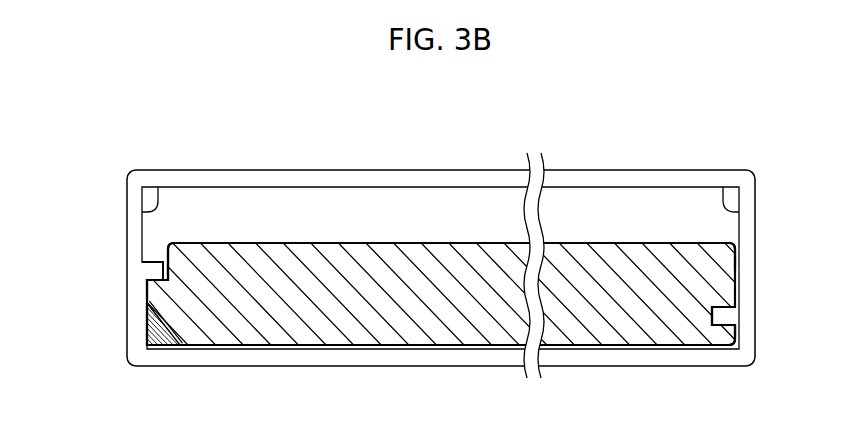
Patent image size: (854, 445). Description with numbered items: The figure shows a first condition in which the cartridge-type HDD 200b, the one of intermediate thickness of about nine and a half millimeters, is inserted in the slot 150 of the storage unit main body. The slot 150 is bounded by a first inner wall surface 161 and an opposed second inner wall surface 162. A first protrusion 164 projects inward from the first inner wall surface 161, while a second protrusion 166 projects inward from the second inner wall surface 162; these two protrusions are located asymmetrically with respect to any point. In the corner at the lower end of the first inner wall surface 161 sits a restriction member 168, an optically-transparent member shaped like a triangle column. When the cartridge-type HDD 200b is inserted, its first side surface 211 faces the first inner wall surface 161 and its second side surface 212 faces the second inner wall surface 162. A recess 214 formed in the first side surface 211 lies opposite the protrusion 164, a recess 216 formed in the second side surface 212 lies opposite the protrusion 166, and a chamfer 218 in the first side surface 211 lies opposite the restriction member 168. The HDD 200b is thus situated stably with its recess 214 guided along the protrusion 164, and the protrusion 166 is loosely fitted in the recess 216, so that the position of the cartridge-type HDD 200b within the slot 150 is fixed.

The slot 150 is at (434, 152).
The first inner wall surface 161 is at (158, 187).
The second inner wall surface 162 is at (723, 187).
The protrusion 164 is at (142, 264).
The protrusion 166 is at (727, 318).
The restriction member 168 is at (151, 350).
The cartridge-type HDD 200b is at (436, 322).
The first side surface 211 is at (176, 293).
The second side surface 212 is at (714, 243).
The recess 214 is at (192, 251).
The recess 216 is at (710, 321).
The chamfer 218 is at (170, 324).